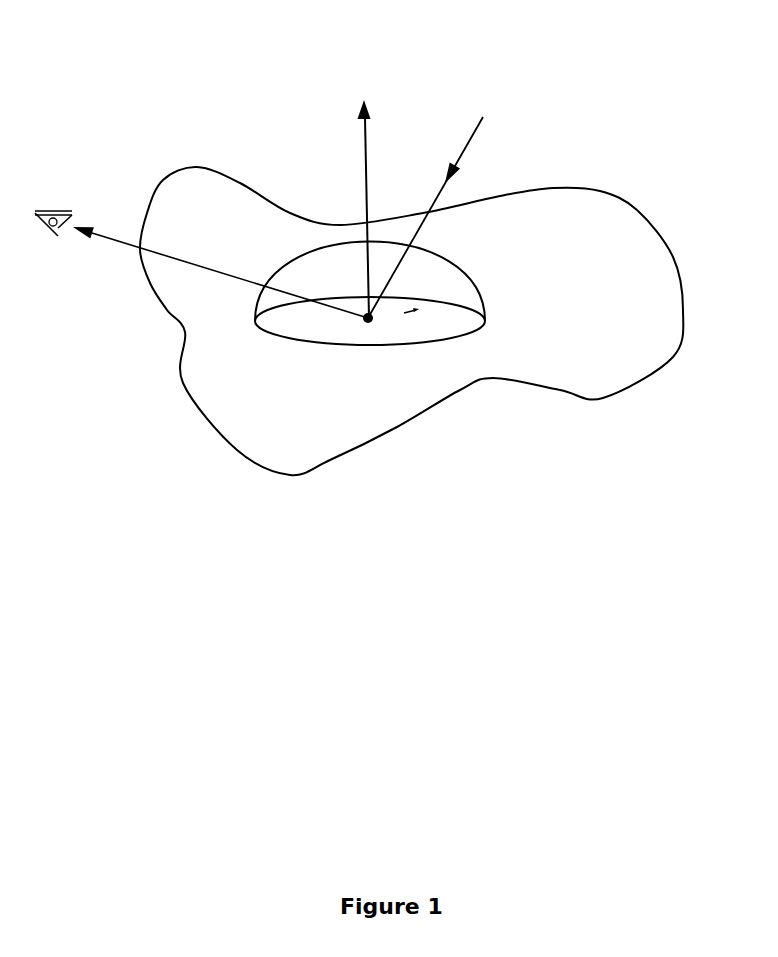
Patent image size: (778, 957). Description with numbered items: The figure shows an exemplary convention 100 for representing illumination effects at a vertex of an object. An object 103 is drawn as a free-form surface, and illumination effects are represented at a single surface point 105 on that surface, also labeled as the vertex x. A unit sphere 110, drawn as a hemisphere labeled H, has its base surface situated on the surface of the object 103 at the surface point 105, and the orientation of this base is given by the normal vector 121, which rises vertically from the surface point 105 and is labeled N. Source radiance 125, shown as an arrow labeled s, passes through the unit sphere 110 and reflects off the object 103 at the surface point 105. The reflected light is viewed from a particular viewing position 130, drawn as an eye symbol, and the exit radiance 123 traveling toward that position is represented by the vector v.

The convention 100 is at (160, 63).
The object 103 is at (570, 188).
The surface point 105 is at (370, 322).
The unit sphere 110 is at (460, 277).
The normal vector 121 is at (367, 155).
The exit radiance 123 is at (208, 265).
The source radiance 125 is at (463, 152).
The viewing position 130 is at (57, 213).